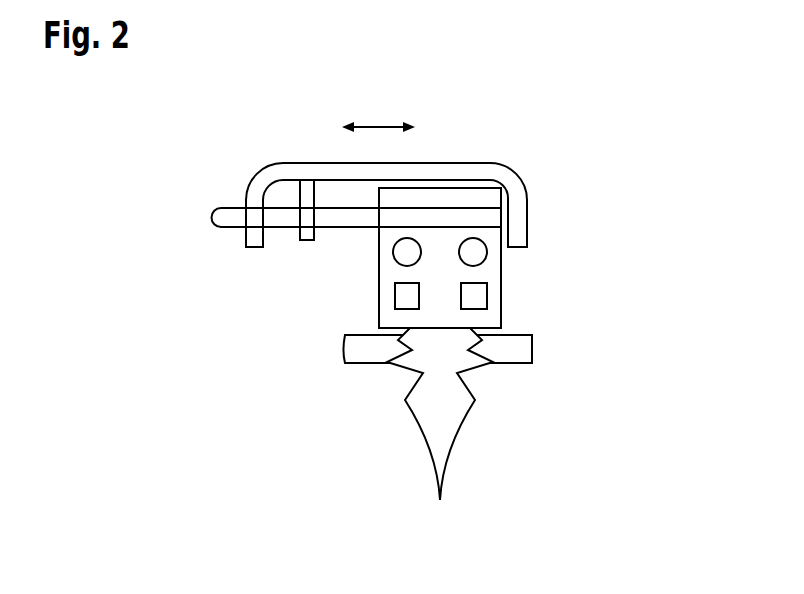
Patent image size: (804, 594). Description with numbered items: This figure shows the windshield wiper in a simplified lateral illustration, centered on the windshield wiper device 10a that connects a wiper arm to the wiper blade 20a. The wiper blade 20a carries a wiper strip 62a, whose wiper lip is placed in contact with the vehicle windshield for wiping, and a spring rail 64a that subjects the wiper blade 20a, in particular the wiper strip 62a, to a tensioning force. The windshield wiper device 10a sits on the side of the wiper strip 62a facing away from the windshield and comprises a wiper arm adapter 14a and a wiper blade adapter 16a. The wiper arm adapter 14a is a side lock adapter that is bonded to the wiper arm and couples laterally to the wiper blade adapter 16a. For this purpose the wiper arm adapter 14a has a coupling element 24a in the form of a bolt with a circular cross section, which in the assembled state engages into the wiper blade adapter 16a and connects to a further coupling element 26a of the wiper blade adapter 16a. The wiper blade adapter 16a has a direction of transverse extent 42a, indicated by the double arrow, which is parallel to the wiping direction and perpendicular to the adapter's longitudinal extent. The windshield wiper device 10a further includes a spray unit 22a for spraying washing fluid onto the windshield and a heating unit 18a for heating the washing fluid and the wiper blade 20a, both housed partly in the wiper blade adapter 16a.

The windshield wiper device 10a is at (572, 155).
The wiper arm adapter 14a is at (292, 165).
The coupling element 24a is at (338, 218).
The further coupling element 26a is at (453, 216).
The wiper blade adapter 16a is at (485, 275).
The spray unit 22a is at (505, 260).
The heating unit 18a is at (386, 311).
The wiper blade 20a is at (557, 336).
The spring rail 64a is at (522, 350).
The wiper strip 62a is at (448, 418).
The direction of transverse extent 42a is at (378, 126).